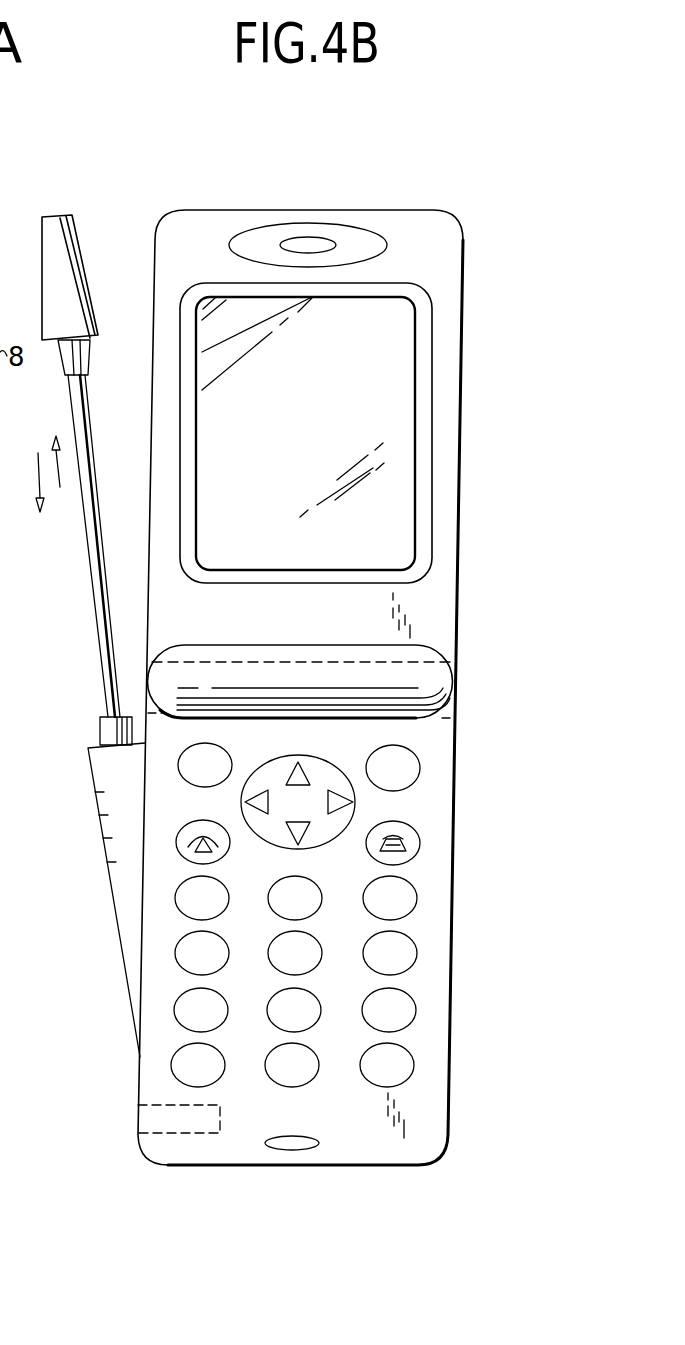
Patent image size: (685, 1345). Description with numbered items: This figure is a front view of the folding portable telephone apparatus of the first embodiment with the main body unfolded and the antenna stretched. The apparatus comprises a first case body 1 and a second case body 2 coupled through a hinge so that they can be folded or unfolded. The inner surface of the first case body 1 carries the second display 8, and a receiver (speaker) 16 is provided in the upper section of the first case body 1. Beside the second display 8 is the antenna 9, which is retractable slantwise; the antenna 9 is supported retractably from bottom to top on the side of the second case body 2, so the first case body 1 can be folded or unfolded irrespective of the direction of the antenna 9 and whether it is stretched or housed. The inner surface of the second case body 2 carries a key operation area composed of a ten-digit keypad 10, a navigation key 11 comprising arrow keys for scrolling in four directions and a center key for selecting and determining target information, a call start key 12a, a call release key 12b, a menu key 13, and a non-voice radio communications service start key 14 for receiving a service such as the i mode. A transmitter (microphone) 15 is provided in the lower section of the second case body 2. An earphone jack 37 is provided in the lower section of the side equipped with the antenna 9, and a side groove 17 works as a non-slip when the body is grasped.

The first case body 1 is at (440, 498).
The second case body 2 is at (432, 1118).
The second display 8 is at (390, 360).
The antenna 9 is at (72, 230).
The ten-digit keypad 10 is at (410, 952).
The navigation key 11 is at (323, 773).
The call start key 12a is at (190, 850).
The call release key 12b is at (417, 833).
The menu key 13 is at (420, 770).
The non-voice radio communications service start key 14 is at (178, 765).
The transmitter (microphone) 15 is at (293, 1143).
The receiver (speaker) 16 is at (316, 243).
The side groove 17 is at (108, 840).
The earphone jack 37 is at (173, 1133).